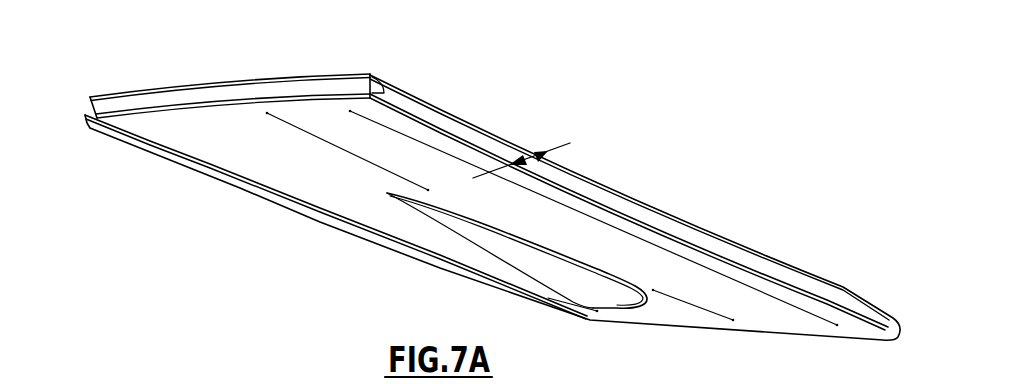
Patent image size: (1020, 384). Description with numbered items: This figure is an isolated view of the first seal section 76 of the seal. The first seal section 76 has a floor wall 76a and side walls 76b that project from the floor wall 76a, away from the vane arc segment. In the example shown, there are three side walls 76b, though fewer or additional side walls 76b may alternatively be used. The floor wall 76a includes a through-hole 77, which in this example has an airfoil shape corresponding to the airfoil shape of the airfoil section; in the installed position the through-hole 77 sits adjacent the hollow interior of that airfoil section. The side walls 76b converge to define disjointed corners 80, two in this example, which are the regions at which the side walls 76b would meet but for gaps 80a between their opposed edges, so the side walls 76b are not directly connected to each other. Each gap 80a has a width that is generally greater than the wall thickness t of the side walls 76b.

The first seal section 76 is at (600, 153).
The floor wall 76a is at (402, 157).
The side walls 76b is at (300, 76).
The through-hole 77 is at (606, 263).
The disjointed corners 80 is at (80, 93).
The gaps 80a is at (384, 88).
The wall thickness t is at (553, 147).